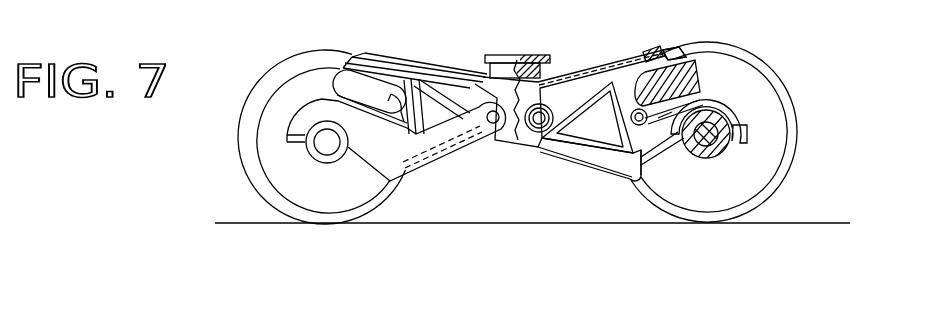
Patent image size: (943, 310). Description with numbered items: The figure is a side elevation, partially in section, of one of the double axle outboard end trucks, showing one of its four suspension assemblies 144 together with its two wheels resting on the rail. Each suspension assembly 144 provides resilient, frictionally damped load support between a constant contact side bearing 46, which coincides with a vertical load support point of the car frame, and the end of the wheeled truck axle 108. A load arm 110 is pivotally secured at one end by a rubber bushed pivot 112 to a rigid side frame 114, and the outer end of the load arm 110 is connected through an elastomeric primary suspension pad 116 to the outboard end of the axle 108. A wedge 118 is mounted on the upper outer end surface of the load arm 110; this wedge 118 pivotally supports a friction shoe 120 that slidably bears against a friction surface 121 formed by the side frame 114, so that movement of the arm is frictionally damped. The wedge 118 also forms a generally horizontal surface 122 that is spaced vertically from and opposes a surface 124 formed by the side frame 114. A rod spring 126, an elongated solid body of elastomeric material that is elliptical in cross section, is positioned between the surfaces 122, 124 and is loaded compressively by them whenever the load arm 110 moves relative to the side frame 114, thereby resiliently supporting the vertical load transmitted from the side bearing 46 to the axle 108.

The suspension assembly 144 is at (476, 133).
The constant contact side bearing 46 is at (518, 41).
The wheeled truck axle 108 is at (748, 144).
The load arm 110 is at (485, 146).
The rubber bushed pivot 112 is at (521, 153).
The rigid side frame 114 is at (514, 77).
The elastomeric primary suspension pad 116 is at (757, 121).
The wedge 118 is at (735, 73).
The friction shoe 120 is at (543, 129).
The friction surface 121 is at (625, 182).
The generally horizontal surface 122 is at (710, 65).
The side frame surface 124 is at (680, 34).
The rod spring 126 is at (503, 57).